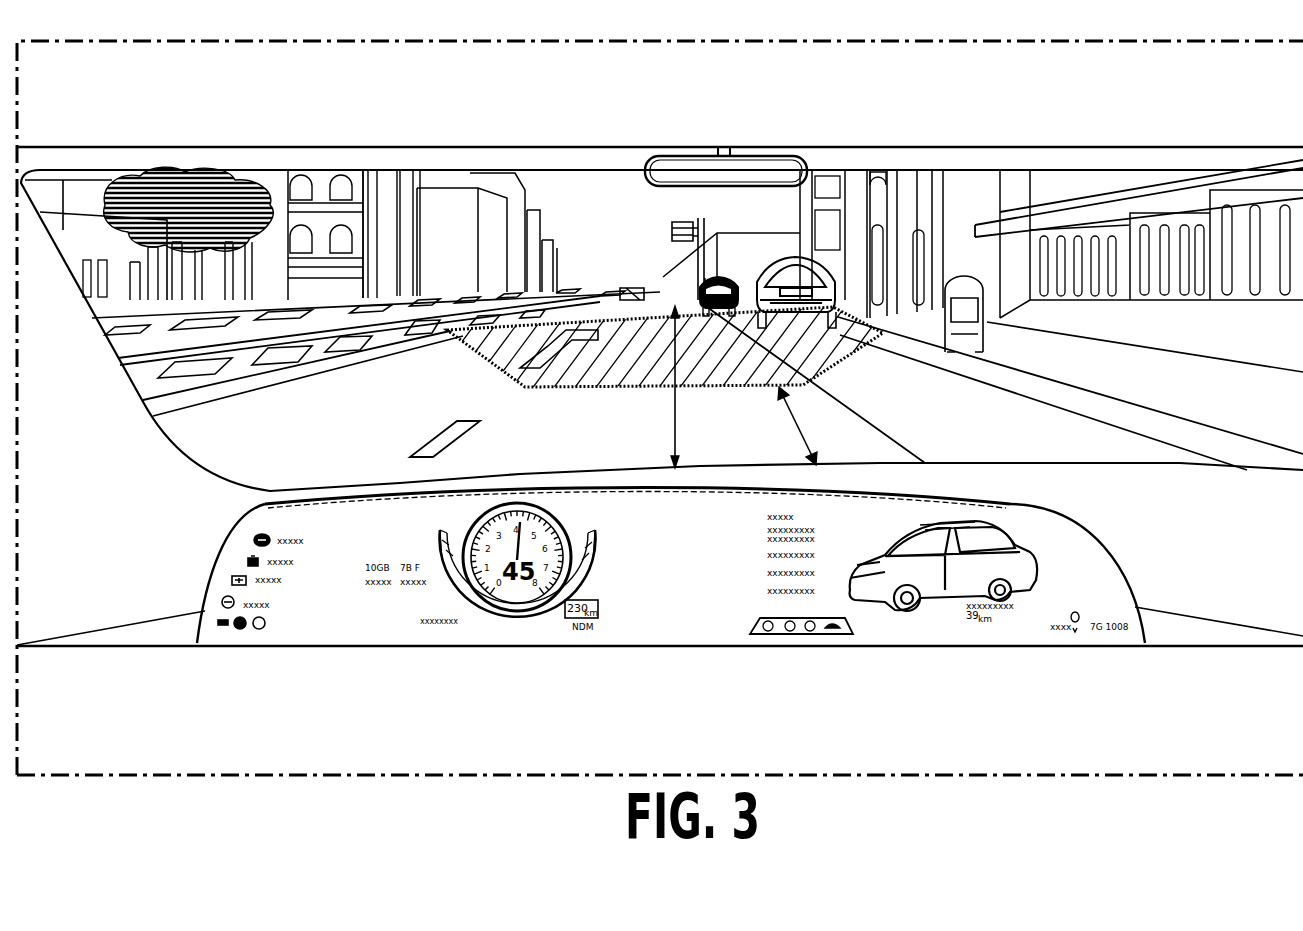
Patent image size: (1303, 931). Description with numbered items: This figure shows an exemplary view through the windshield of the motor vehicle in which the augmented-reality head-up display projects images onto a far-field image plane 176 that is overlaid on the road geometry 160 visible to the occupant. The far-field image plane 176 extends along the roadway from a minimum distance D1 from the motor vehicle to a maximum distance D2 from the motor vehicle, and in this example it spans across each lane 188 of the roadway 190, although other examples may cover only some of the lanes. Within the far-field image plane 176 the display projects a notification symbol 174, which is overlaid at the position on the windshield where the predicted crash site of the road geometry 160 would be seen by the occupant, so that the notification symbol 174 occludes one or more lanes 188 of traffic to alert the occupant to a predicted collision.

The road geometry 160 is at (598, 242).
The far-field image plane 176 is at (636, 296).
The notification symbol 174 is at (624, 352).
The roadway 190 is at (378, 416).
The lanes of traffic 188 is at (498, 443).
The minimum distance D1 is at (792, 428).
The maximum distance D2 is at (667, 418).